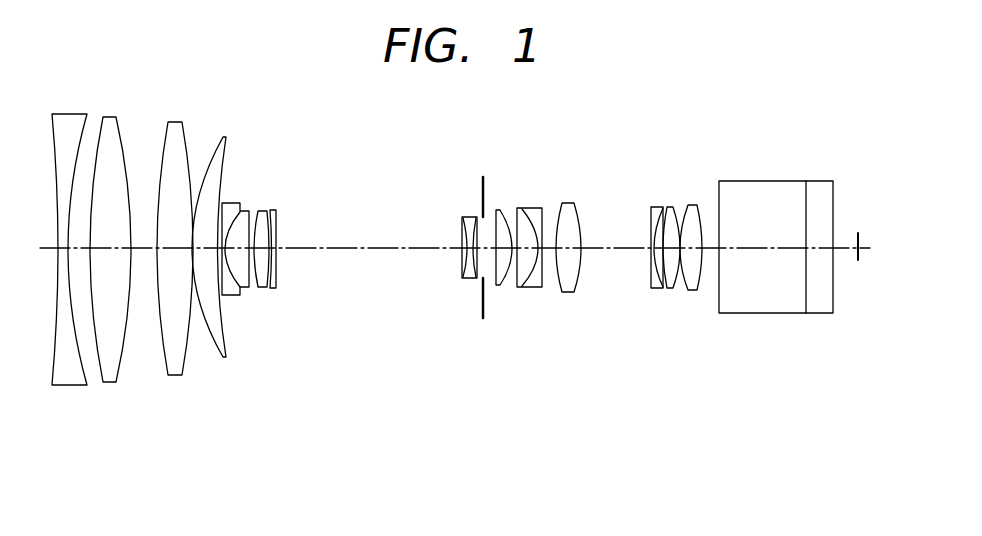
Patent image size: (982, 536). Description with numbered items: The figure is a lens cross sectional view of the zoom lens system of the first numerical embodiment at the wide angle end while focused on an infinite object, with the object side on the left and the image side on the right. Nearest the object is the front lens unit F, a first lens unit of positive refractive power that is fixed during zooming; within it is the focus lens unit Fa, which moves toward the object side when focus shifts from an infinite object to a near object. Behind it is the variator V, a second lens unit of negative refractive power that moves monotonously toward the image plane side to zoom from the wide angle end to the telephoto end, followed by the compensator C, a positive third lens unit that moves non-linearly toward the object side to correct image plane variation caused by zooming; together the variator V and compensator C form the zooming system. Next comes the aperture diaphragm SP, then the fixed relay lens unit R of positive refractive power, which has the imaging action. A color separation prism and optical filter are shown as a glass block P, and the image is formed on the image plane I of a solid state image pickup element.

The front lens unit F is at (144, 266).
The focus lens unit Fa is at (237, 115).
The variator V is at (285, 373).
The compensator C is at (463, 289).
The aperture diaphragm SP is at (479, 325).
The relay lens unit R is at (702, 372).
The glass block P is at (841, 373).
The image plane I is at (858, 270).